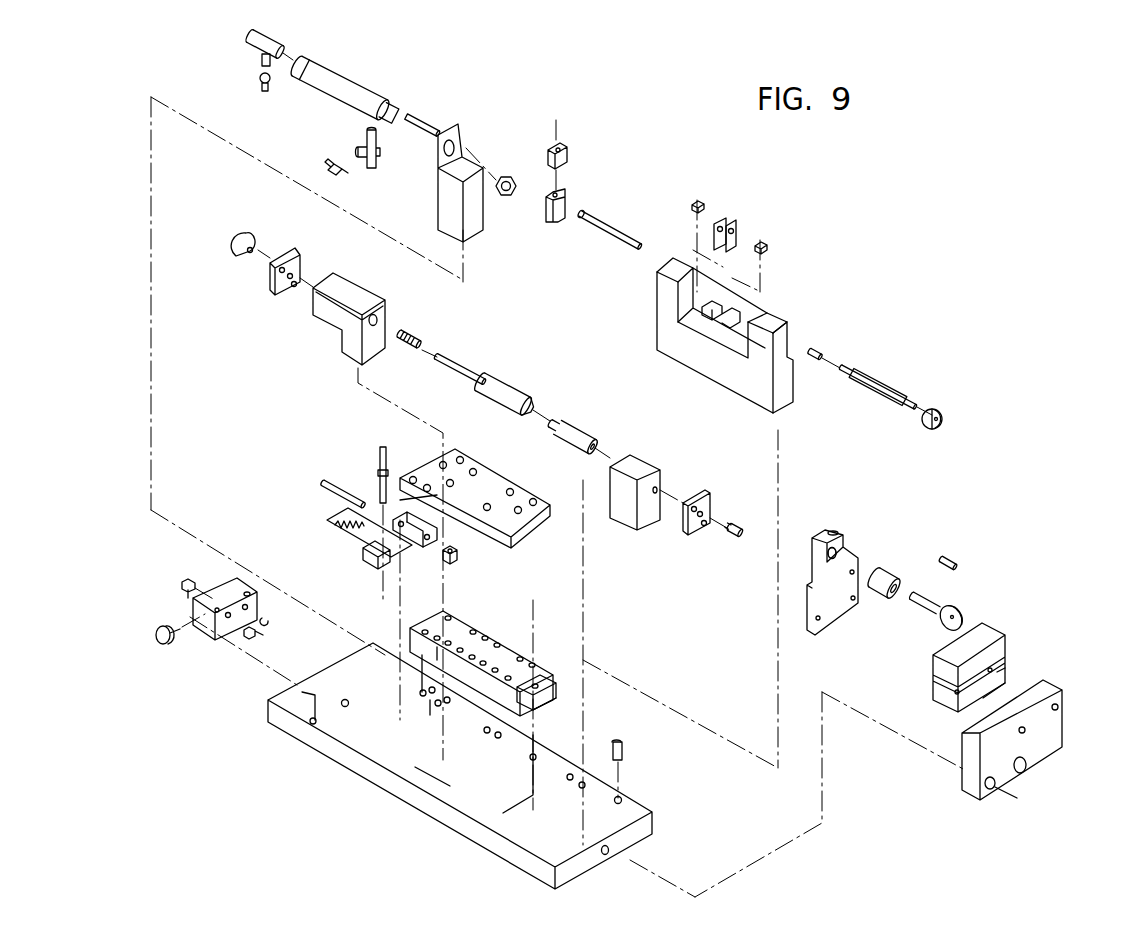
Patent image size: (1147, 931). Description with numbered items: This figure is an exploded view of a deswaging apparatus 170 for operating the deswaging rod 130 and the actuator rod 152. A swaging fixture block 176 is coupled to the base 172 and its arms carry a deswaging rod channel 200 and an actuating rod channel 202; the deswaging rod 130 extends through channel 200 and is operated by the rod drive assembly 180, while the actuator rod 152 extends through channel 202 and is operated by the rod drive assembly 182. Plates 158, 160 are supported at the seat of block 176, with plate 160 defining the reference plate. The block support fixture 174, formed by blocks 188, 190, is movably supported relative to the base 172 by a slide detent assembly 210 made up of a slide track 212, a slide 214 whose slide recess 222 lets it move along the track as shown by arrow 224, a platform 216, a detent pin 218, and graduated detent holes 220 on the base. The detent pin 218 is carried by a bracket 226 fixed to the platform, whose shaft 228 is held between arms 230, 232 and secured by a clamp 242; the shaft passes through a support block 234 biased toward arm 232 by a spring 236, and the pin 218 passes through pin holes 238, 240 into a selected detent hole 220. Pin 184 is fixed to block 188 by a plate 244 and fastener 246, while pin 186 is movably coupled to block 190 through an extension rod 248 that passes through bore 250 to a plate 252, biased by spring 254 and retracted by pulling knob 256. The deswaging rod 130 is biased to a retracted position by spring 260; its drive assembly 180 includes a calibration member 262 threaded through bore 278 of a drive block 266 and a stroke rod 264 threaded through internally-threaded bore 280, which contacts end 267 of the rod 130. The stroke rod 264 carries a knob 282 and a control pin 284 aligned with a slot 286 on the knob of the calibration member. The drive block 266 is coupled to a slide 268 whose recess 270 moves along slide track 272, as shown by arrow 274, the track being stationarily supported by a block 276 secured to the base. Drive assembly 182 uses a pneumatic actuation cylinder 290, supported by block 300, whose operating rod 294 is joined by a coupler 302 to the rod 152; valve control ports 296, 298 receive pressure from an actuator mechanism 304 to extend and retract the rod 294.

The deswaging rod 130 is at (894, 386).
The actuator rod 152 is at (607, 227).
The plate 158 is at (735, 232).
The reference plate 160 is at (721, 228).
The feed assembly 170 is at (914, 286).
The base 172 is at (307, 737).
The block support fixture 174 is at (278, 567).
The swaging fixture block 176 is at (780, 315).
The rod drive assembly 180 is at (810, 507).
The rod drive assembly 182 is at (267, 27).
The pin 184 is at (574, 427).
The pin 186 is at (500, 381).
The block 188 is at (637, 455).
The block 190 is at (354, 290).
The deswaging rod channel 200 is at (786, 334).
The actuating rod channel 202 is at (700, 288).
The slide detent assembly 210 is at (552, 716).
The slide track 212 is at (540, 701).
The slide 214 is at (438, 624).
The platform 216 is at (467, 461).
The detent pin 218 is at (376, 461).
The graduated detent holes 220 is at (448, 779).
The slide recess 222 is at (548, 693).
The arrow 224 is at (553, 650).
The bracket 226 is at (438, 532).
The shaft 228 is at (323, 480).
The arm 230 is at (397, 517).
The arm 232 is at (425, 550).
The support block 234 is at (367, 550).
The spring 236 is at (335, 529).
The pin hole 238 is at (342, 483).
The pin hole 240 is at (380, 552).
The clamp 242 is at (457, 561).
The plate 244 is at (701, 492).
The fastener 246 is at (731, 524).
The extension rod 248 is at (460, 364).
The bore 250 is at (378, 316).
The plate 252 is at (297, 249).
The spring 254 is at (414, 336).
The knob 256 is at (252, 234).
The spring 260 is at (815, 348).
The calibration member 262 is at (880, 570).
The stroke rod 264 is at (955, 603).
The drive block 266 is at (811, 564).
The end 267 is at (946, 414).
The slide 268 is at (942, 643).
The recess 270 is at (952, 668).
The slide track 272 is at (994, 660).
The arrow 274 is at (951, 653).
The block 276 is at (1056, 717).
The threaded bore 278 is at (831, 556).
The internally-threaded bore 280 is at (893, 598).
The knob 282 is at (946, 625).
The control pin 284 is at (954, 558).
The slot 286 is at (895, 590).
The actuation cylinder 290 is at (323, 67).
The operating rod 294 is at (398, 117).
The valve control port 296 is at (376, 165).
The valve control port 298 is at (252, 48).
The block 300 is at (476, 210).
The coupler 302 is at (551, 220).
The actuator mechanism 304 is at (208, 583).